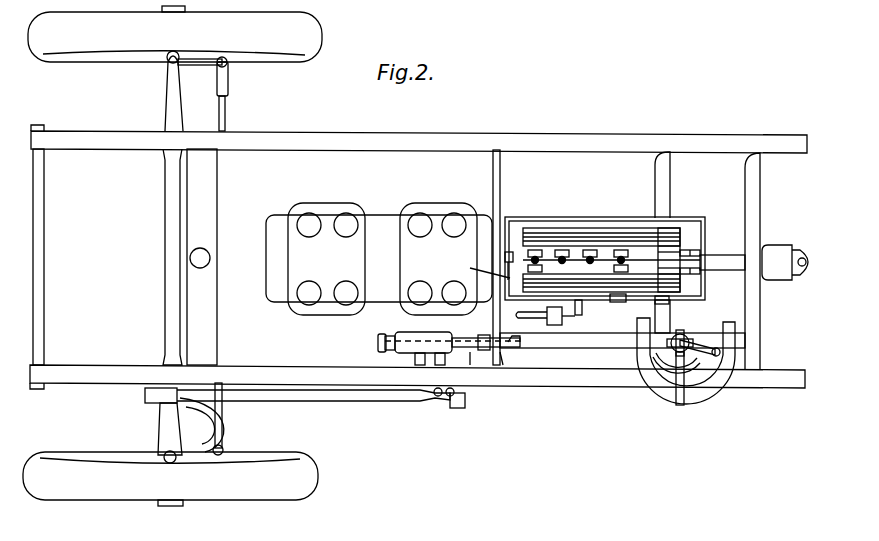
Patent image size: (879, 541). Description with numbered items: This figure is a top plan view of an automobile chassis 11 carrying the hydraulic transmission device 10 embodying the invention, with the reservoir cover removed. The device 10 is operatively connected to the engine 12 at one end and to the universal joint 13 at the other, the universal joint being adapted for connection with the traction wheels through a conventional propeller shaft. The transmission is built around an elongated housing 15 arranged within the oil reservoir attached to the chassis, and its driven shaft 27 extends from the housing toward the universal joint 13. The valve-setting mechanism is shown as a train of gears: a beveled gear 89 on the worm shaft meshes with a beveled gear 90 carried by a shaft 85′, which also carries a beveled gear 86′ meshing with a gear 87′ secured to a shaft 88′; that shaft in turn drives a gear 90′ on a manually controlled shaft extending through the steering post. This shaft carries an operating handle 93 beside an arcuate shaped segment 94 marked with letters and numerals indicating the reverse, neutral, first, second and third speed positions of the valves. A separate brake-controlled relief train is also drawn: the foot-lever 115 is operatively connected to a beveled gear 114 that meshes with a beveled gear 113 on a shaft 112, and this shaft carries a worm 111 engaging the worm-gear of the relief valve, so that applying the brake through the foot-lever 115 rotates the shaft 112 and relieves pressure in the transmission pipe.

The transmission device 10 is at (678, 220).
The automobile chassis 11 is at (563, 384).
The engine 12 is at (357, 233).
The universal joint 13 is at (776, 253).
The housing 15 is at (592, 235).
The driven shaft 27 is at (716, 258).
The shaft 85′ is at (473, 265).
The beveled gear 86′ is at (517, 345).
The gear 87′ is at (503, 352).
The shaft 88′ is at (470, 352).
The beveled gear 89 is at (528, 240).
The beveled gear 90 is at (508, 252).
The gear 90′ is at (385, 343).
The operating handle 93 is at (720, 352).
The arcuate shaped segment 94 is at (694, 361).
The worm 111 is at (668, 303).
The shaft 112 is at (618, 300).
The beveled gear 113 is at (574, 299).
The beveled gear 114 is at (562, 320).
The foot-lever 115 is at (556, 326).